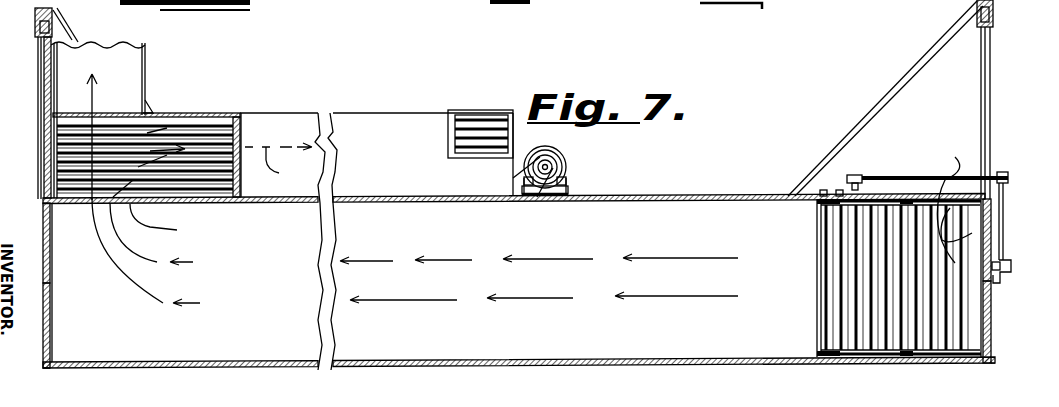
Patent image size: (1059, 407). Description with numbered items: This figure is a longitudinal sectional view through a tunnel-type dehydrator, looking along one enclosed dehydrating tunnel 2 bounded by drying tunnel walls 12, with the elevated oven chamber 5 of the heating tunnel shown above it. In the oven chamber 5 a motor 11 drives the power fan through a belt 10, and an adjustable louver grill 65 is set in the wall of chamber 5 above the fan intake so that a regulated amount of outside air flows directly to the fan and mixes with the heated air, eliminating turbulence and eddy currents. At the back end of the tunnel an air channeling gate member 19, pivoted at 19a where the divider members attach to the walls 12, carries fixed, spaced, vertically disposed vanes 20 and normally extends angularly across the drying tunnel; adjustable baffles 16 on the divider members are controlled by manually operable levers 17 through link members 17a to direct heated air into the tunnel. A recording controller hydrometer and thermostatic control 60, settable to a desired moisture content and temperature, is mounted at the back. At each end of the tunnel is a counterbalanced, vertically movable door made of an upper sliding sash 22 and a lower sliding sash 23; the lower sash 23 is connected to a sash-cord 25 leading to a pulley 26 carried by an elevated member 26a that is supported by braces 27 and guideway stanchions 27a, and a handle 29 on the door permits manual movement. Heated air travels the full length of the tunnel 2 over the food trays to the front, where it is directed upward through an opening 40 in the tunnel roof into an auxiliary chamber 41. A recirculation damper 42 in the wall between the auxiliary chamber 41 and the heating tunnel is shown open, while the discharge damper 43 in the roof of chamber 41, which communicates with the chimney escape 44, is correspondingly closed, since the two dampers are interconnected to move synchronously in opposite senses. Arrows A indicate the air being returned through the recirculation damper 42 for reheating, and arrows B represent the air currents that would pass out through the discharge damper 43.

The dehydrating tunnel 2 is at (487, 293).
The oven chamber 5 is at (360, 132).
The belt 10 is at (545, 190).
The motor 11 is at (565, 155).
The drying tunnel wall 12 is at (813, 216).
The adjustable baffle 16 is at (952, 203).
The manually operable lever 17 is at (1011, 270).
The link member 17a is at (890, 176).
The air channeling gate member 19 is at (839, 193).
The pivot 19a is at (823, 193).
The vane 20 is at (873, 243).
The upper sliding sash 22 is at (50, 224).
The lower sliding sash 23 is at (45, 313).
The sash-cord 25 is at (44, 155).
The pulley 26 is at (40, 29).
The elevated member 26a is at (37, 10).
The brace 27 is at (66, 22).
The guideway stanchion 27a is at (44, 61).
The handle 29 is at (43, 337).
The opening 40 is at (167, 222).
The auxiliary chamber 41 is at (227, 118).
The recirculation damper 42 is at (152, 133).
The discharge damper 43 is at (118, 116).
The chimney escape 44 is at (146, 62).
The recording controller hydrometer and thermostatic control 60 is at (1003, 278).
The adjustable louver grill 65 is at (473, 127).
The recirculation air arrows A is at (191, 256).
The discharge air arrows B is at (107, 257).